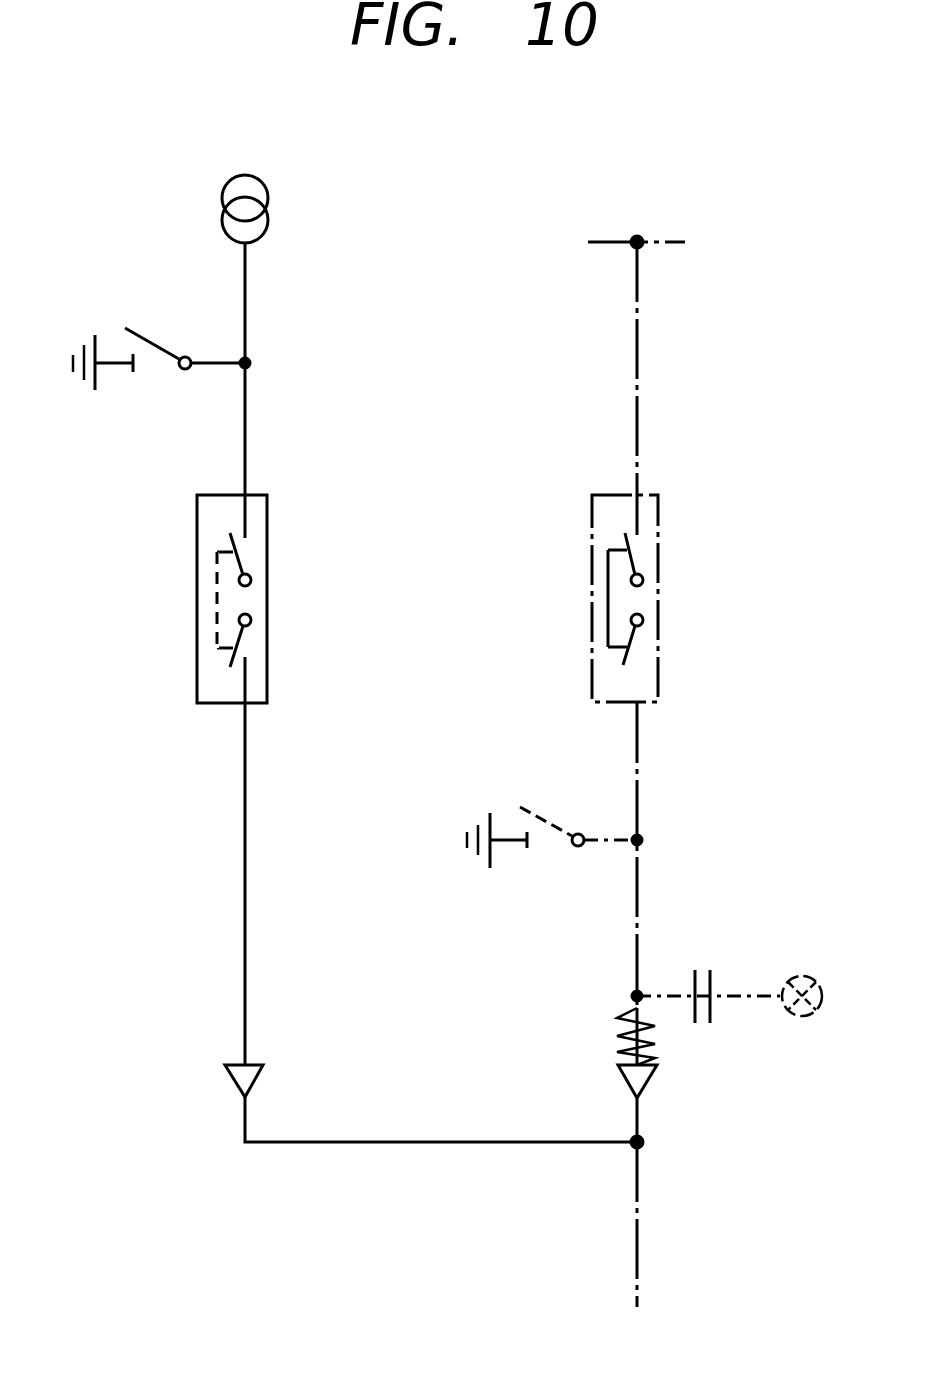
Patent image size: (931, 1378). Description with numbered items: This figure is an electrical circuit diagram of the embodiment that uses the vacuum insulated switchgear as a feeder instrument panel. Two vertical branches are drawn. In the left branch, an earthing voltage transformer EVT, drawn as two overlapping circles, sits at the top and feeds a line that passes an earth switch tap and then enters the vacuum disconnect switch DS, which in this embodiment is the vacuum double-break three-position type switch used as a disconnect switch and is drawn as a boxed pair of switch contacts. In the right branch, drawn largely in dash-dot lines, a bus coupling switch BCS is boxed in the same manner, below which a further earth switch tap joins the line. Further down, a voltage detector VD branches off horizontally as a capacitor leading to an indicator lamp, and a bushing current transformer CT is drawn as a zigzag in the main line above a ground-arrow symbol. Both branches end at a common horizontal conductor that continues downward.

The earthing voltage transformer EVT is at (223, 217).
The vacuum disconnect switch DS is at (197, 595).
The bus coupling switch BCS is at (592, 597).
The voltage detector VD is at (713, 980).
The bushing current transformer CT is at (623, 1033).